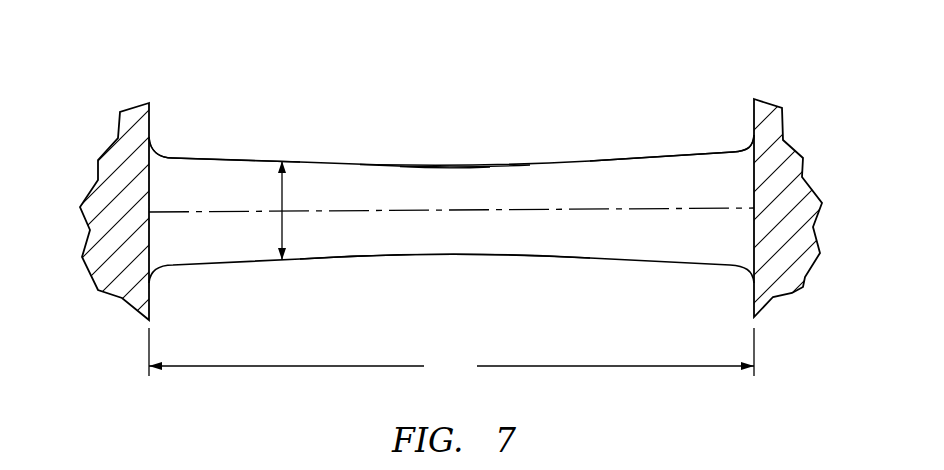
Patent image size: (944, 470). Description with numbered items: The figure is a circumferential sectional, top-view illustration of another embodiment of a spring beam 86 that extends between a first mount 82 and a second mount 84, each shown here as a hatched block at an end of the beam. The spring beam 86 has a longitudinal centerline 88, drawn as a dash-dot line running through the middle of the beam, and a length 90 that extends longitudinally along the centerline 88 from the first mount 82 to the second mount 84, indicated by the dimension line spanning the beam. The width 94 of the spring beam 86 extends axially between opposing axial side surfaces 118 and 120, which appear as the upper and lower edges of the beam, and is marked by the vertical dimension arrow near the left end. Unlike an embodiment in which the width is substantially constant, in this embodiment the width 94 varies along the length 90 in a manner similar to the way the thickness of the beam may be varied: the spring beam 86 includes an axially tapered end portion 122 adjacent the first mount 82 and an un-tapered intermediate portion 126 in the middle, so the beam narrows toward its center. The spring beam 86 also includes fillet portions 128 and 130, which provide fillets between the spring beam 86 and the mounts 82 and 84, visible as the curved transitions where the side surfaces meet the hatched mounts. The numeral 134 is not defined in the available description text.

The first mount 82 is at (127, 138).
The second mount 84 is at (775, 135).
The spring beam 86 is at (542, 161).
The longitudinal centerline 88 is at (674, 210).
The length 90 is at (451, 353).
The width 94 is at (283, 194).
The axial side surface 118 is at (442, 167).
The axial side surface 120 is at (440, 257).
The axially tapered end portion 122 is at (223, 155).
The un-tapered intermediate portion 126 is at (473, 165).
The fillet portion 128 is at (160, 141).
The fillet portion 130 is at (748, 138).
The second tapered portion 134 is at (633, 146).